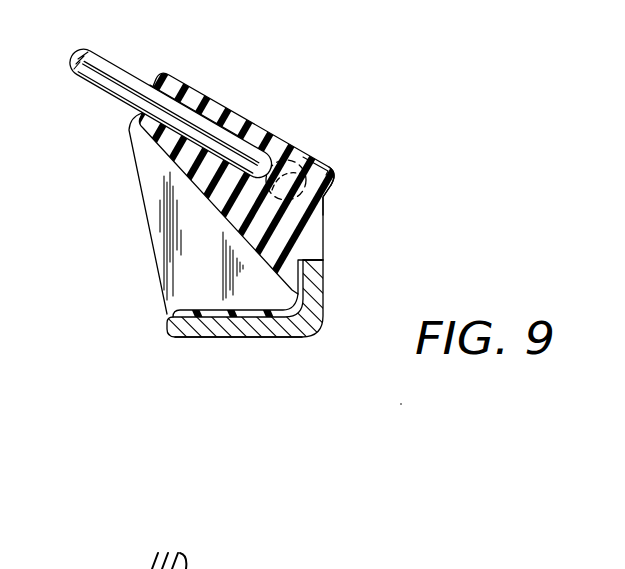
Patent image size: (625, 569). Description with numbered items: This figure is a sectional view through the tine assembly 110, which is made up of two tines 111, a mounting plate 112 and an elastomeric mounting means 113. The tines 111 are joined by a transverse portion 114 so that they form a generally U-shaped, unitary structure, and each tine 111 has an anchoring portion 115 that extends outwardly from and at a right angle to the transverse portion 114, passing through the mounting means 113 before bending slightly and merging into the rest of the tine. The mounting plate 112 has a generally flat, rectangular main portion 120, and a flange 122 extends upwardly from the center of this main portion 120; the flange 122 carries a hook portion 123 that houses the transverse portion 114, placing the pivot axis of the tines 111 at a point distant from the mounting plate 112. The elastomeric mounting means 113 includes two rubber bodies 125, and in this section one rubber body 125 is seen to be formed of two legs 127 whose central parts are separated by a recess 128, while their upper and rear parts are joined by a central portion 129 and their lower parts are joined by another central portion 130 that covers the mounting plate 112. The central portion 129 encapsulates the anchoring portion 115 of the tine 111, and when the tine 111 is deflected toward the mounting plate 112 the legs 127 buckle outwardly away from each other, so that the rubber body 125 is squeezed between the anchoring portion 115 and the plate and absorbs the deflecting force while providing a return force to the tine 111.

The tine assembly 110 is at (368, 237).
The tine 111 is at (111, 62).
The mounting plate 112 is at (327, 286).
The elastomeric mounting means 113 is at (277, 127).
The transverse portion 114 is at (342, 173).
The anchoring portion 115 is at (219, 126).
The main portion 120 is at (250, 330).
The flange 122 is at (320, 260).
The hook portion 123 is at (310, 160).
The rubber body 125 is at (327, 197).
The leg 127 is at (183, 285).
The recess 128 is at (182, 216).
The central portion 129 is at (182, 155).
The central portion 130 is at (263, 303).